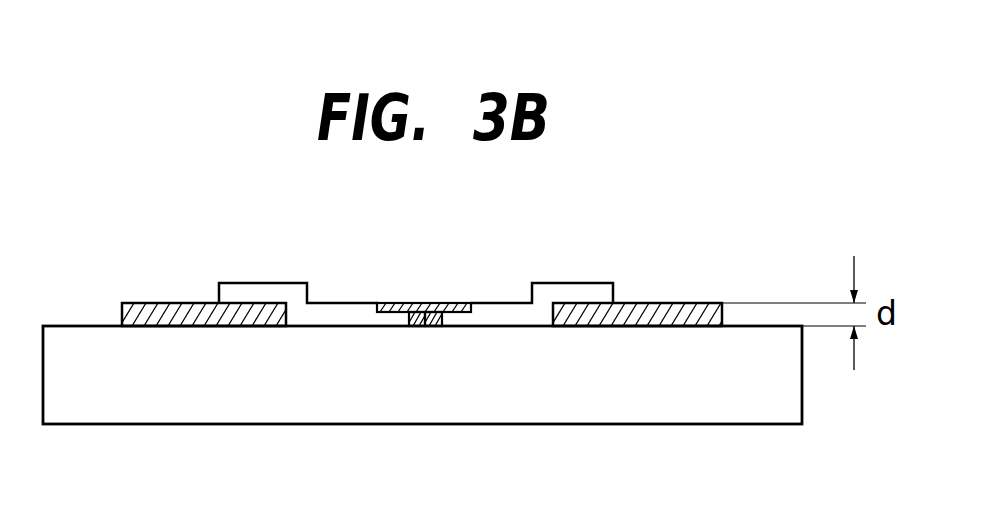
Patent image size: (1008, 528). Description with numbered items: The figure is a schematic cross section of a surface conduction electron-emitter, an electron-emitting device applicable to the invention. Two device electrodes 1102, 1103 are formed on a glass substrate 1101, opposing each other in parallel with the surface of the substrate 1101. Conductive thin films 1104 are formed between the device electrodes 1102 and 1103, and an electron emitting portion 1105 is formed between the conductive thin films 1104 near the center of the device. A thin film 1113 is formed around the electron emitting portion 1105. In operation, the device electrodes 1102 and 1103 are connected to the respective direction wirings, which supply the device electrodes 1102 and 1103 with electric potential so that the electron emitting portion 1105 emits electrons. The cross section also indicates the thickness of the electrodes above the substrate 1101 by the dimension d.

The glass substrate 1101 is at (727, 407).
The device electrode 1102 is at (678, 305).
The device electrode 1103 is at (150, 303).
The conductive thin film 1104 is at (345, 307).
The electron emitting portion 1105 is at (425, 305).
The thin film 1113 is at (447, 305).